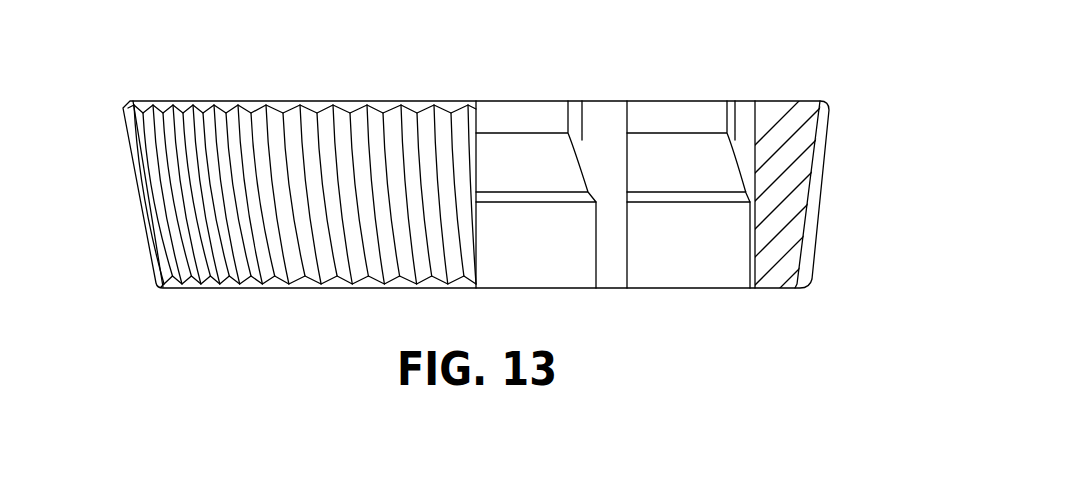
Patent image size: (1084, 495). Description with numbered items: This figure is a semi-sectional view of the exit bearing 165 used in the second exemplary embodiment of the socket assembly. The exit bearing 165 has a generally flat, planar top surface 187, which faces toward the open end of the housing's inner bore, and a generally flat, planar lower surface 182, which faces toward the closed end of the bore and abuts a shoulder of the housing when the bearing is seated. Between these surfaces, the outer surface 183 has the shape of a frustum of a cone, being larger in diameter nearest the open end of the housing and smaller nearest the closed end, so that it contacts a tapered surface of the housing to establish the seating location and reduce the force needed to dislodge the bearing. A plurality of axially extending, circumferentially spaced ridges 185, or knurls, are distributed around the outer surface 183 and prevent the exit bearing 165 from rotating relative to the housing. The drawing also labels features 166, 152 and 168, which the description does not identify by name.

The exit bearing 165 is at (861, 76).
The outer surface 183 is at (132, 188).
The ridges 185 is at (207, 145).
The top surface 187 is at (347, 100).
The lower surface 182 is at (332, 288).
The slot 166 is at (517, 157).
The recess 152 is at (698, 265).
The channel 168 is at (747, 122).